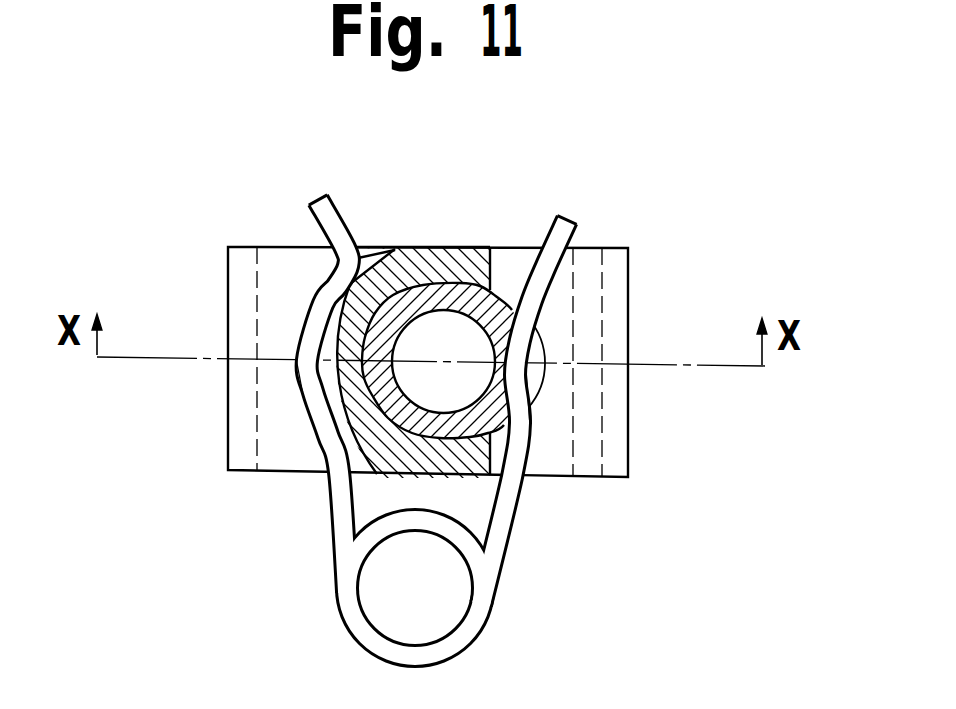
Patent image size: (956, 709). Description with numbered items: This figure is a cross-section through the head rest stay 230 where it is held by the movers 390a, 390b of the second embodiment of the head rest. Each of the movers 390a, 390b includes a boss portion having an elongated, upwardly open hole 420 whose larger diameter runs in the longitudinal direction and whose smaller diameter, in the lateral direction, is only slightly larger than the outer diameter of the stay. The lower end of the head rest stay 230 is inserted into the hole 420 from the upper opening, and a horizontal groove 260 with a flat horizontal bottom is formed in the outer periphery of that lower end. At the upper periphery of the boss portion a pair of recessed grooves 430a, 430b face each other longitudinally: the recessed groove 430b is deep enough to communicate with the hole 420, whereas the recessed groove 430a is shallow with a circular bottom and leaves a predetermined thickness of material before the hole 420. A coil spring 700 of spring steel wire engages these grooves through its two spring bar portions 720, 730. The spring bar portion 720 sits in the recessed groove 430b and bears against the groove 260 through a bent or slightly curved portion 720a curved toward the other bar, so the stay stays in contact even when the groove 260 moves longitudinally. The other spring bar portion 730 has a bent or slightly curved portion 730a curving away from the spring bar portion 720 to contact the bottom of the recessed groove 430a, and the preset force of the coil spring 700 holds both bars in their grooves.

The head rest stay 230 is at (364, 395).
The horizontal groove 260 is at (510, 325).
The mover 390a is at (228, 293).
The mover 390b is at (394, 321).
The elongated hole 420 is at (360, 398).
The recessed groove 430a is at (372, 267).
The recessed groove 430b is at (507, 262).
The coil spring 700 is at (491, 621).
The spring bar portion 720 is at (553, 208).
The bent or slightly curved portion 720a is at (513, 390).
The spring bar portion 730 is at (335, 204).
The bent or slightly curved portion 730a is at (300, 399).